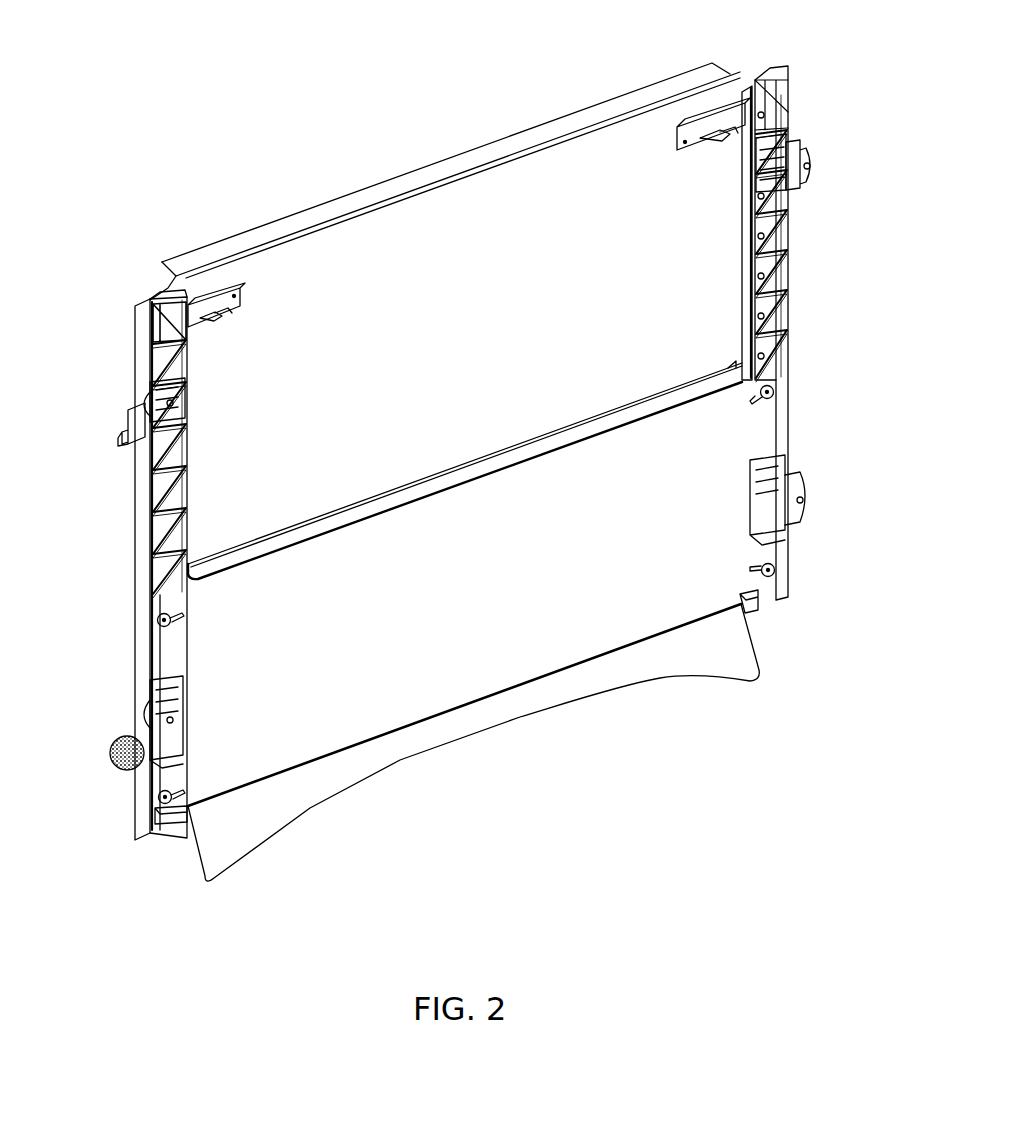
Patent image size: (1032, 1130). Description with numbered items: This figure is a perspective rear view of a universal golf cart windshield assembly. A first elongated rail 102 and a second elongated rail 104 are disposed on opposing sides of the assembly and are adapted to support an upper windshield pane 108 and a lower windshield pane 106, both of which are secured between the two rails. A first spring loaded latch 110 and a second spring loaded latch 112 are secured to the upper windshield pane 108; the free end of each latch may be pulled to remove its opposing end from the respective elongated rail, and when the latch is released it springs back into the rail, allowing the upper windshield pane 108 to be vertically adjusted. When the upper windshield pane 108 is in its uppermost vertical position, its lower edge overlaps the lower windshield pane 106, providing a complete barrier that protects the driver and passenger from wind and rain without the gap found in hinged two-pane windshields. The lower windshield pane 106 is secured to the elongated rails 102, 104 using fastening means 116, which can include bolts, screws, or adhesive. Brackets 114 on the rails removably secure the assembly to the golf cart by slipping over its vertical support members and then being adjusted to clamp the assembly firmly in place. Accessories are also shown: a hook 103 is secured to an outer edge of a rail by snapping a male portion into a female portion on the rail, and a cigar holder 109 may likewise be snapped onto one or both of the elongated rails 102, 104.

The first elongated rail 102 is at (790, 74).
The hook 103 is at (126, 428).
The second elongated rail 104 is at (134, 312).
The lower windshield pane 106 is at (528, 650).
The upper windshield pane 108 is at (462, 203).
The cigar holder 109 is at (125, 738).
The first spring loaded latch 110 is at (682, 152).
The second spring loaded latch 112 is at (246, 305).
The brackets 114 is at (800, 152).
The fastening means 116 is at (775, 392).